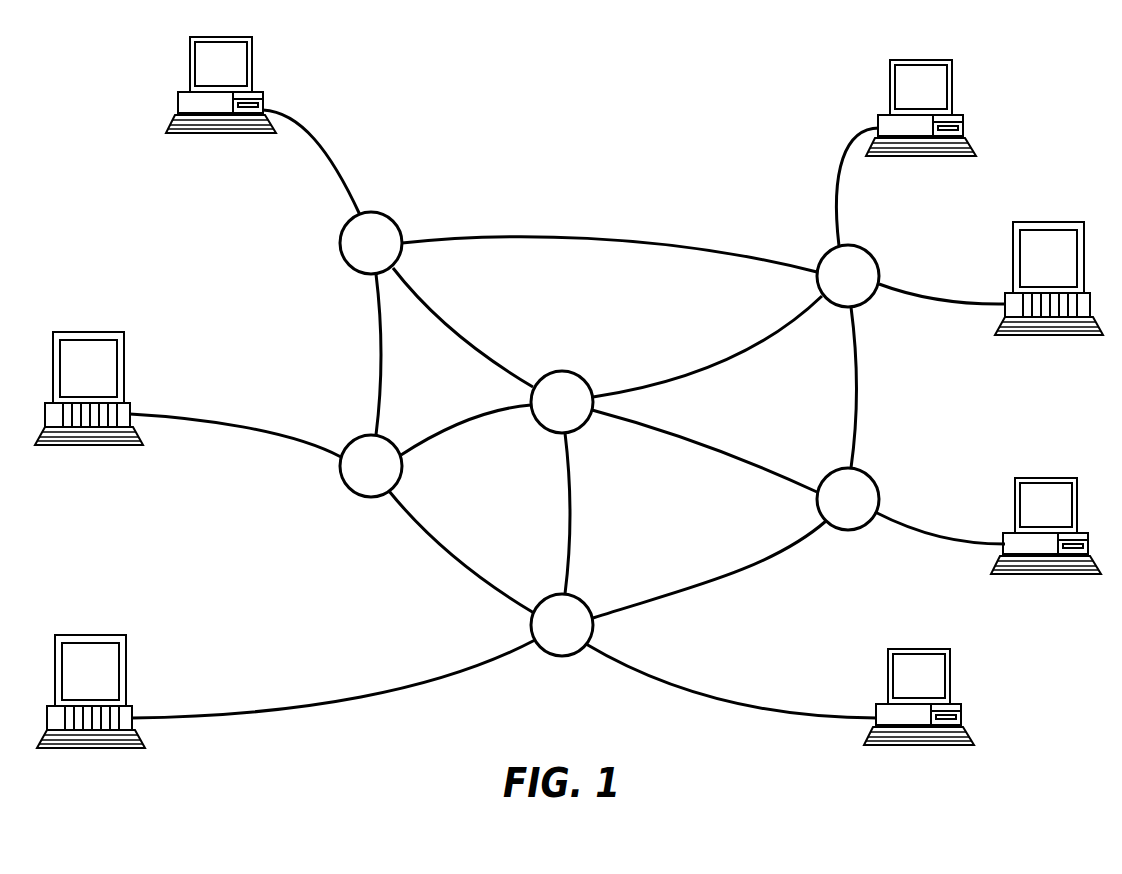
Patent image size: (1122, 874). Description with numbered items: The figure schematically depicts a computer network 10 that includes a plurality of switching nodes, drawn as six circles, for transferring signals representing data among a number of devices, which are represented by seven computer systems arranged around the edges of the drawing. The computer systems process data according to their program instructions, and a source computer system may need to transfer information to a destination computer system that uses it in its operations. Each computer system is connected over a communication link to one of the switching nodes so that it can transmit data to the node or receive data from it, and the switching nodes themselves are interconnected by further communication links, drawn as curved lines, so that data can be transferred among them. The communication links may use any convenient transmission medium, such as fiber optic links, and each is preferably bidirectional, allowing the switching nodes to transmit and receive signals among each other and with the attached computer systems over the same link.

The computer network 10 is at (621, 68).